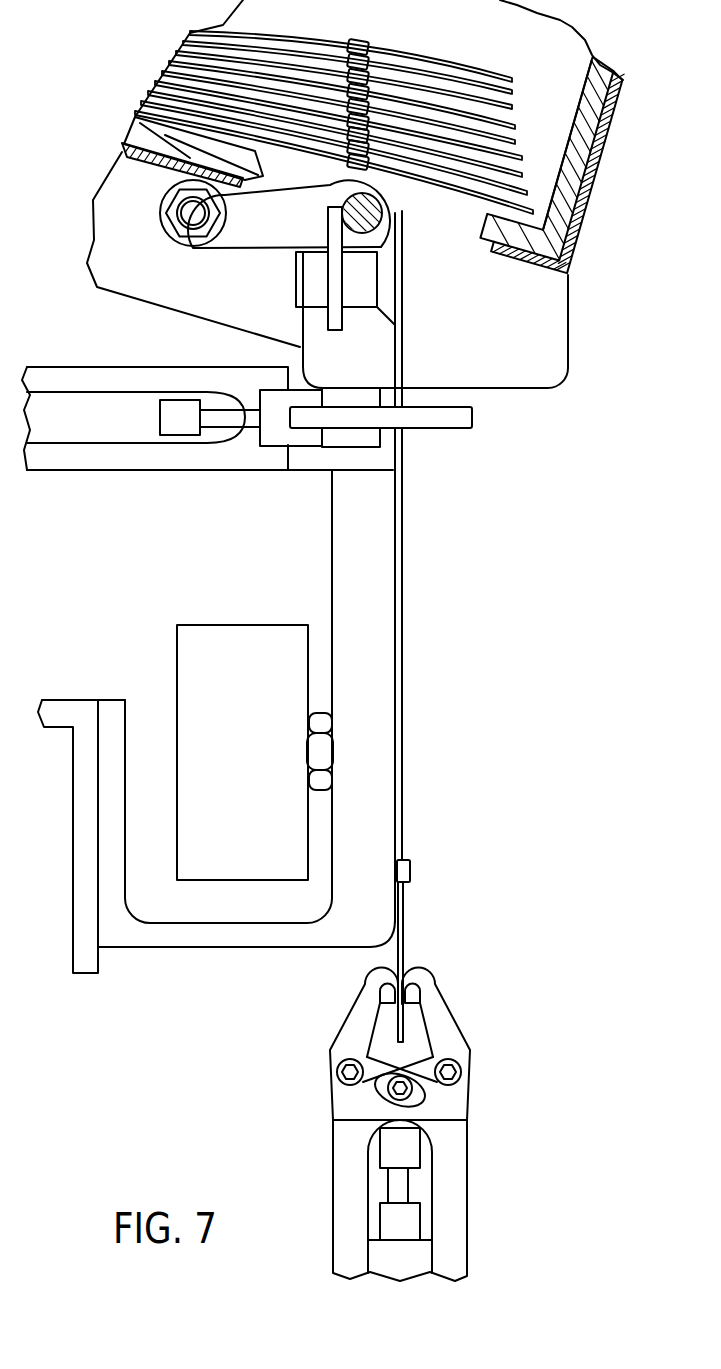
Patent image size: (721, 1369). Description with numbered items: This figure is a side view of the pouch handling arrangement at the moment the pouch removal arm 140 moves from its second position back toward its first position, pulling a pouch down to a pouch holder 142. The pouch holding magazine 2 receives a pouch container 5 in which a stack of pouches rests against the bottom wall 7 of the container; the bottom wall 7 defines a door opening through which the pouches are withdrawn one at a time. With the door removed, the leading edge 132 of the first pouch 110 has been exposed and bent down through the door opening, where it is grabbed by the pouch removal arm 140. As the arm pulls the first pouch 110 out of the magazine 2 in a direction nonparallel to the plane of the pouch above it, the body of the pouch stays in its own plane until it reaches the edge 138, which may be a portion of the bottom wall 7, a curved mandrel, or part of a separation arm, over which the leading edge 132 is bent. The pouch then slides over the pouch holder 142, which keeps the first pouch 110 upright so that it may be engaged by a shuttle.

The pouch holding magazine 2 is at (147, 152).
The pouch container 5 is at (590, 112).
The bottom wall 7 is at (137, 127).
The first pouch 110 is at (405, 748).
The leading edge 132 is at (403, 950).
The edge 138 is at (343, 187).
The pouch removal arm 140 is at (458, 1105).
The pouch holder 142 is at (336, 557).